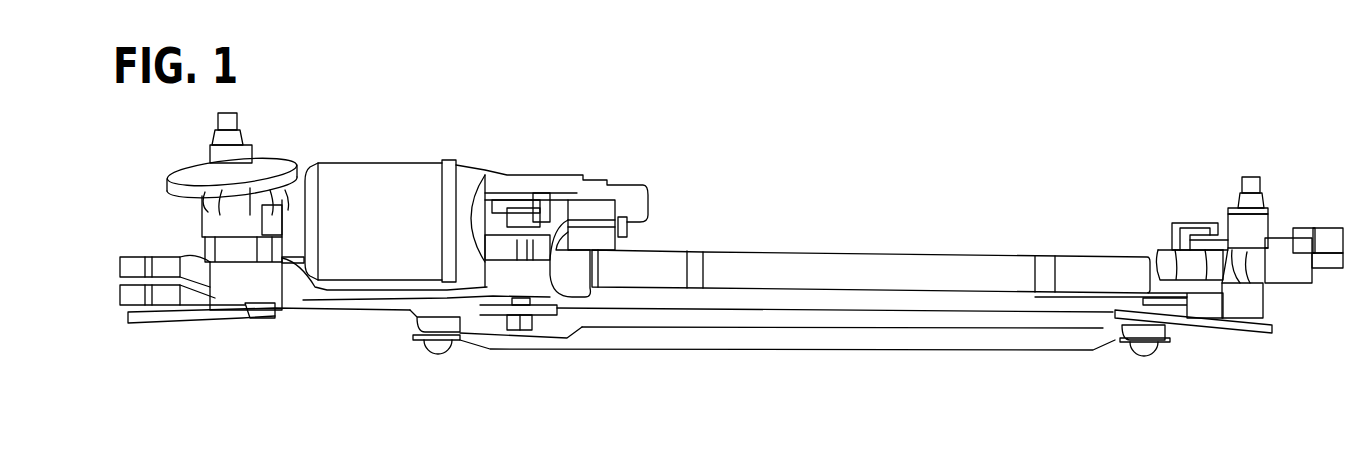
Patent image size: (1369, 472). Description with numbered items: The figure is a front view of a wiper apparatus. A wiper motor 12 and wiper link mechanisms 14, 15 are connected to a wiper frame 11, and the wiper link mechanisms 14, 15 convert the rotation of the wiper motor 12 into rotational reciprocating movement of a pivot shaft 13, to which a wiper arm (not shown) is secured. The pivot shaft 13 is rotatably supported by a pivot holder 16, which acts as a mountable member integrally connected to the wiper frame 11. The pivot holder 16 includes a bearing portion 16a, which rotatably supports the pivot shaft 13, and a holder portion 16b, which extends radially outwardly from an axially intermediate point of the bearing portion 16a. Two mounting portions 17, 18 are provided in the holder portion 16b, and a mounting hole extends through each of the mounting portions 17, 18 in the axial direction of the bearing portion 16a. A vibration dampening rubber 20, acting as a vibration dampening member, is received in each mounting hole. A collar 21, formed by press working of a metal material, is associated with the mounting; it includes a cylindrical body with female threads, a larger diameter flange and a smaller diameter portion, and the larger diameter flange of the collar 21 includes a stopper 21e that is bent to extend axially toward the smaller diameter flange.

The wiper frame 11 is at (862, 262).
The wiper motor 12 is at (383, 173).
The pivot shaft 13 is at (1257, 203).
The wiper link mechanism 14 is at (977, 298).
The wiper link mechanism 15 is at (890, 343).
The pivot holder 16 is at (1333, 378).
The bearing portion 16a is at (1248, 310).
The holder portion 16b is at (1293, 277).
The mounting portion 17 is at (1207, 242).
The mounting portion 18 is at (1332, 227).
The vibration dampening rubber 20 is at (1193, 230).
The collar 21 is at (1160, 248).
The stopper 21e is at (1170, 233).